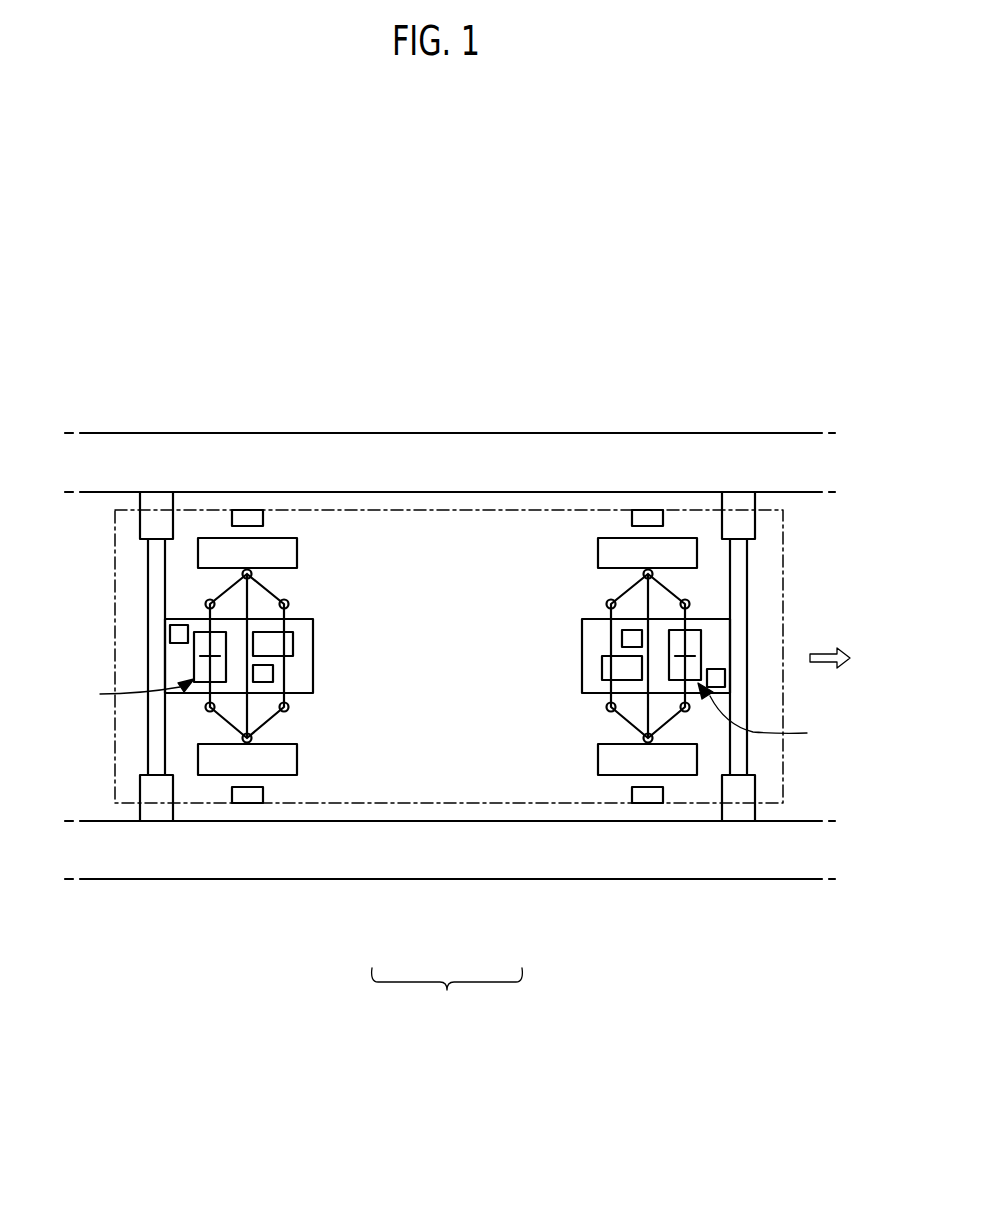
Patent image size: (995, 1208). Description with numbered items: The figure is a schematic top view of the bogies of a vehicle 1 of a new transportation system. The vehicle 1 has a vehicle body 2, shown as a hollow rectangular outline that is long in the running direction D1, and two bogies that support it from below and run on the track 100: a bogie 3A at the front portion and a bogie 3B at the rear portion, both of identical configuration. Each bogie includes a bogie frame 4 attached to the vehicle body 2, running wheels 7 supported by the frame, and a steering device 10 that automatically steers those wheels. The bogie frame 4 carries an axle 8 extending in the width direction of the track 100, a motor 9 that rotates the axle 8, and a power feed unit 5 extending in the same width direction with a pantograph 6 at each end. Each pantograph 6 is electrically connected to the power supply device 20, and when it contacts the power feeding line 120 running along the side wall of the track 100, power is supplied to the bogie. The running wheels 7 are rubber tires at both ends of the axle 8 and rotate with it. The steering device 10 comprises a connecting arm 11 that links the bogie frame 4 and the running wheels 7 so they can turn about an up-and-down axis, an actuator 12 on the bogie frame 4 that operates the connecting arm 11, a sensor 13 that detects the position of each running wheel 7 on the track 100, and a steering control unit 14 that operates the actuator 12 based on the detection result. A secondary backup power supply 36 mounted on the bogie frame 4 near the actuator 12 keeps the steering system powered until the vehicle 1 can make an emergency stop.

The vehicle 1 is at (447, 997).
The vehicle body 2 is at (451, 806).
The bogie 3A is at (557, 740).
The bogie 3B is at (338, 740).
The bogie frame 4 is at (303, 659).
The power feed unit 5 is at (157, 590).
The pantograph 6 is at (157, 500).
The running wheel 7 is at (281, 548).
The axle 8 is at (248, 597).
The motor 9 is at (273, 672).
The steering device 10 is at (451, 714).
The connecting arm 11 is at (285, 612).
The actuator 12 is at (200, 667).
The sensor 13 is at (248, 516).
The steering control unit 14 is at (170, 632).
The power supply device 20 is at (447, 679).
The secondary backup power supply 36 is at (295, 642).
The track 100 is at (760, 443).
The power feeding line 120 is at (438, 492).
The running direction D1 is at (822, 650).